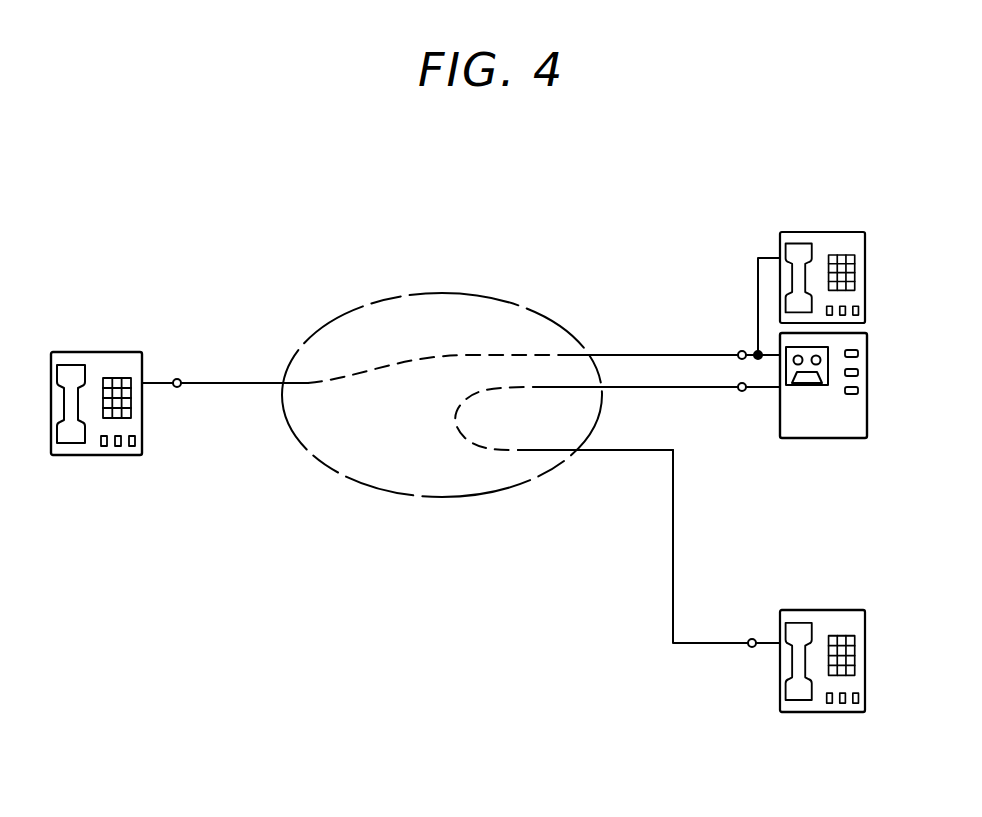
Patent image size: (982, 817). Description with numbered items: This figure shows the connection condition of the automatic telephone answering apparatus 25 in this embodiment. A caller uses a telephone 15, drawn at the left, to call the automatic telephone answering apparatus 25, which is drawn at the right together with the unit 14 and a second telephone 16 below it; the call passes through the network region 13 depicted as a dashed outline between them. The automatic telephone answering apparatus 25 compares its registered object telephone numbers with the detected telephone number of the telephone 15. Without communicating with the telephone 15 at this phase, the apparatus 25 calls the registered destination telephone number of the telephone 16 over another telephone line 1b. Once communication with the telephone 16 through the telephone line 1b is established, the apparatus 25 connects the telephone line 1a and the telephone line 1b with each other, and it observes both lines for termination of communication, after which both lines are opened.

The communication network (exchange) 13 is at (402, 302).
The communication terminal apparatus 14 is at (843, 438).
The telephone 15 is at (100, 351).
The telephone 16 is at (828, 610).
The automatic telephone answering apparatus 25 is at (877, 255).
The telephone line 1a is at (747, 348).
The telephone line 1b is at (756, 390).